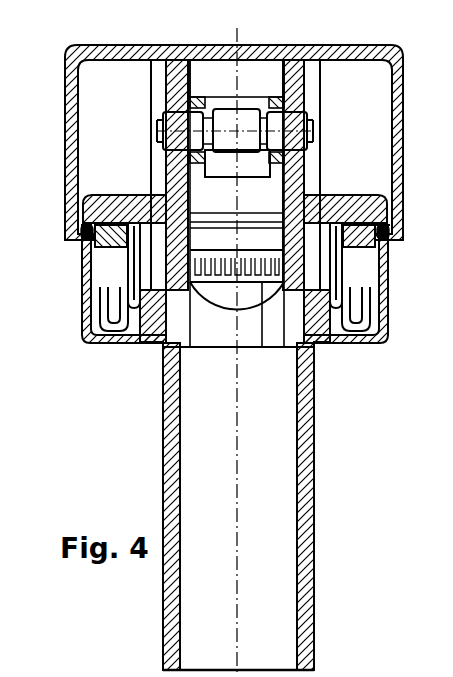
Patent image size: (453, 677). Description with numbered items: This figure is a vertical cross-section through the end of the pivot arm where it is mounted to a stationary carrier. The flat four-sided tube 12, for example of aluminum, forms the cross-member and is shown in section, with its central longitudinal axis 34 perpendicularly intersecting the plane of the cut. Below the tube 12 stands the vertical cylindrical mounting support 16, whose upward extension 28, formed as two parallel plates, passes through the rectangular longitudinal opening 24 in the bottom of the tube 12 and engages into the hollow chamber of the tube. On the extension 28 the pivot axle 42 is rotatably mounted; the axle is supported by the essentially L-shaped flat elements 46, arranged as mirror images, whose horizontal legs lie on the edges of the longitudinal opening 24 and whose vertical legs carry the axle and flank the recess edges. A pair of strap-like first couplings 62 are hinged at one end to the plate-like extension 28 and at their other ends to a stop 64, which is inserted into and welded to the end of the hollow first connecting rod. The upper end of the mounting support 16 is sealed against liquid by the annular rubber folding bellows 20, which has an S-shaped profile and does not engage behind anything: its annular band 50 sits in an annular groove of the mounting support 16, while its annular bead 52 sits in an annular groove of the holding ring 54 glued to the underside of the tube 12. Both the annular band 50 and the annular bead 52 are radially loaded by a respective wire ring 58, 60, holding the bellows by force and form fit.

The four-sided tube 12 is at (302, 46).
The mounting support 16 is at (314, 466).
The folding bellows 20 is at (88, 343).
The longitudinal opening 24 is at (186, 207).
The extension 28 is at (178, 62).
The central longitudinal axis 34 is at (282, 127).
The pivot axle 42 is at (262, 348).
The L-shaped flat element 46 is at (120, 195).
The annular band 50 is at (163, 346).
The annular bead 52 is at (370, 240).
The holding ring 54 is at (105, 242).
The wire ring 58 is at (322, 343).
The wire ring 60 is at (82, 236).
The first coupling 62 is at (205, 98).
The stop 64 is at (248, 155).